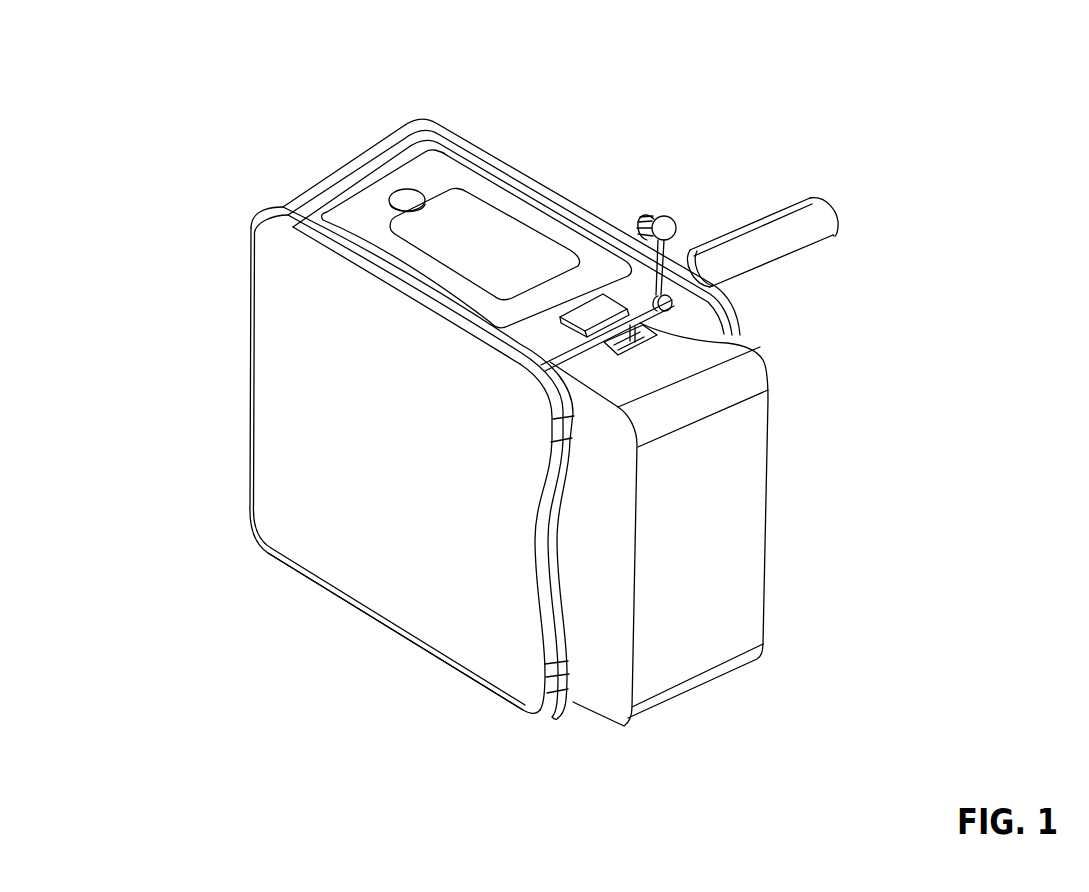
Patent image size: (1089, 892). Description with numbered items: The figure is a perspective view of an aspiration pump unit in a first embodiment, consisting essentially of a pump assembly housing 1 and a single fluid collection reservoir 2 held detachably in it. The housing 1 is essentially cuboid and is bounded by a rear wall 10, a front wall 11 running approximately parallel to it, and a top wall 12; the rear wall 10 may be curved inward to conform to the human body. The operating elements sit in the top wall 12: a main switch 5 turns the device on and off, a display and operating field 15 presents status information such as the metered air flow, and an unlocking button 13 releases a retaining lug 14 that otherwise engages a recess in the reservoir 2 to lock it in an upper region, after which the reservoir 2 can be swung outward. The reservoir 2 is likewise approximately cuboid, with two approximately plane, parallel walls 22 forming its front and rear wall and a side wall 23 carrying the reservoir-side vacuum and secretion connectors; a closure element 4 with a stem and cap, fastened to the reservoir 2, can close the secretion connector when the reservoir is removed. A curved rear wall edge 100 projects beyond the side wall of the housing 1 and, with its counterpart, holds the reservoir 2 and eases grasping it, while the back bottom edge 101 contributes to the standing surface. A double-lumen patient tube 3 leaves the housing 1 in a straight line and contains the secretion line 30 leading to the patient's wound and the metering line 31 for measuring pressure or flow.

The pump assembly housing 1 is at (546, 105).
The fluid collection reservoir 2 is at (721, 524).
The double-lumen patient tube 3 is at (799, 169).
The closure element 4 is at (670, 215).
The main switch 5 is at (403, 189).
The rear wall 10 is at (266, 440).
The front wall 11 is at (490, 148).
The top wall 12 is at (420, 128).
The unlocking button 13 is at (648, 212).
The retaining lug 14 is at (740, 336).
The display and operating field 15 is at (595, 305).
The walls 22 is at (612, 553).
The side wall 23 is at (721, 553).
The secretion line 30 is at (859, 217).
The metering line 31 is at (810, 198).
The rear wall edge 100 is at (557, 633).
The back bottom edge 101 is at (455, 668).